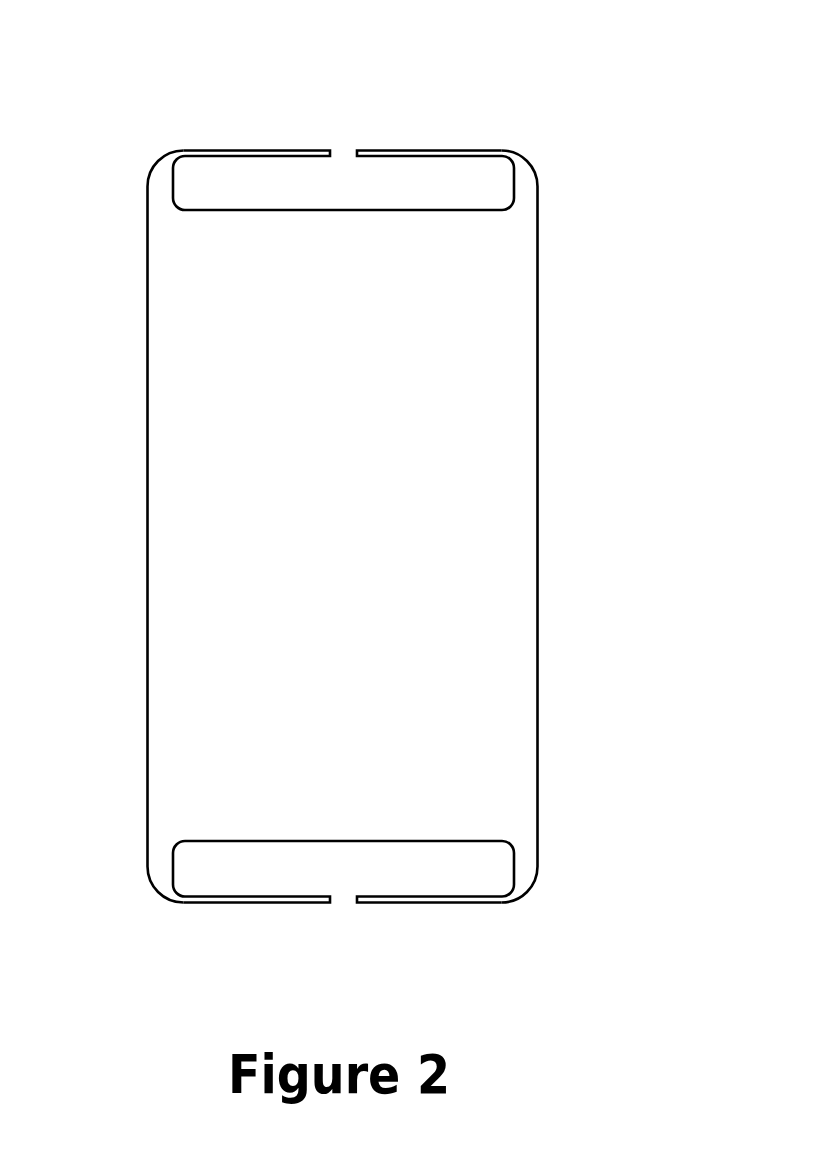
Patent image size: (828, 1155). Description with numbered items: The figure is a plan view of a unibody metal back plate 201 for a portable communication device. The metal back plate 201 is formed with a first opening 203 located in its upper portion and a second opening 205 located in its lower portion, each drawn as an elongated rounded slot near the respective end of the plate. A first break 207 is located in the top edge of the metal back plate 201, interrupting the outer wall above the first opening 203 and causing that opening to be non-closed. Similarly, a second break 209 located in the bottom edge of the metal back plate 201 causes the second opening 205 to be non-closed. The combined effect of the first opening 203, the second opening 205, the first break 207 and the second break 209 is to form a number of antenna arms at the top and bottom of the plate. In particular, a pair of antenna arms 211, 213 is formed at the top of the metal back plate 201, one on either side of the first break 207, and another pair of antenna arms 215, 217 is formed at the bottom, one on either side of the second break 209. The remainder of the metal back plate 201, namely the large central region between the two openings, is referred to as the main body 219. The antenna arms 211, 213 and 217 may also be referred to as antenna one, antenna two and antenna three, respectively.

The metal back plate 201 is at (158, 122).
The first opening 203 is at (422, 190).
The second opening 205 is at (463, 868).
The first break 207 is at (343, 148).
The second break 209 is at (343, 905).
The antenna arm 211 is at (283, 147).
The antenna arm 213 is at (395, 147).
The antenna arm 215 is at (290, 900).
The antenna arm 217 is at (398, 902).
The main body 219 is at (448, 508).